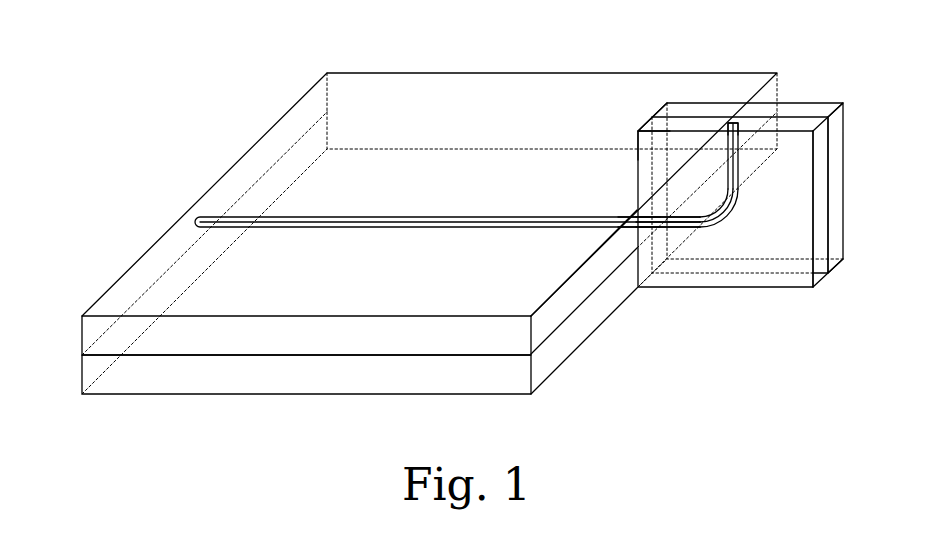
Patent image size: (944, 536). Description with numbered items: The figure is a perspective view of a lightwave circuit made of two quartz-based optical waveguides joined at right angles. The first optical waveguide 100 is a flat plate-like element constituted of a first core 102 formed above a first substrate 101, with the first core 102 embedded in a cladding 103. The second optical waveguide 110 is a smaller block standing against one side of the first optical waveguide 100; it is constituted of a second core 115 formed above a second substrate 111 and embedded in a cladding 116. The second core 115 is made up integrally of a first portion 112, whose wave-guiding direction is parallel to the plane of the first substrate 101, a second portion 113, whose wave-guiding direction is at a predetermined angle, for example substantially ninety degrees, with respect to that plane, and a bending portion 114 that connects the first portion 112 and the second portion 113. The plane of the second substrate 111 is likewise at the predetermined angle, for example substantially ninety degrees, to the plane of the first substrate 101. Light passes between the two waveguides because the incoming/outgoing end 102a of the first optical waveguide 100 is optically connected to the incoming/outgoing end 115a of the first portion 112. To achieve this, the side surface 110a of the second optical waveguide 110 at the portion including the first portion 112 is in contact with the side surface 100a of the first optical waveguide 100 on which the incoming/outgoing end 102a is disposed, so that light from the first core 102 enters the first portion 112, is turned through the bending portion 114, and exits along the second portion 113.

The first optical waveguide 100 is at (405, 208).
The side surface 100a is at (577, 288).
The first substrate 101 is at (82, 376).
The cladding 103 is at (82, 337).
The first core 102 is at (468, 194).
The incoming/outgoing end 102a is at (633, 218).
The second optical waveguide 110 is at (758, 173).
The side surface 110a is at (637, 136).
The second substrate 111 is at (845, 127).
The first portion 112 is at (683, 196).
The second portion 113 is at (742, 160).
The bending portion 114 is at (730, 180).
The second core 115 is at (716, 241).
The incoming/outgoing end 115a is at (662, 208).
The cladding 116 is at (820, 186).